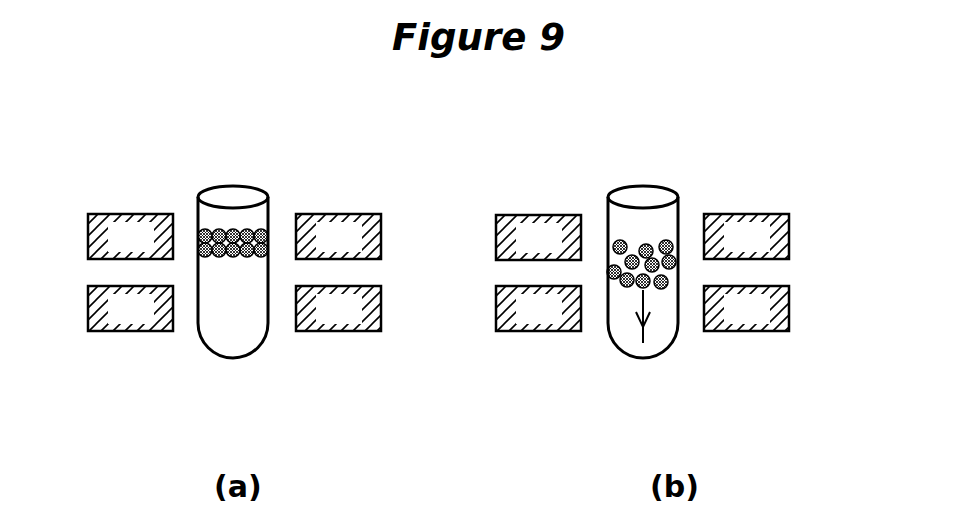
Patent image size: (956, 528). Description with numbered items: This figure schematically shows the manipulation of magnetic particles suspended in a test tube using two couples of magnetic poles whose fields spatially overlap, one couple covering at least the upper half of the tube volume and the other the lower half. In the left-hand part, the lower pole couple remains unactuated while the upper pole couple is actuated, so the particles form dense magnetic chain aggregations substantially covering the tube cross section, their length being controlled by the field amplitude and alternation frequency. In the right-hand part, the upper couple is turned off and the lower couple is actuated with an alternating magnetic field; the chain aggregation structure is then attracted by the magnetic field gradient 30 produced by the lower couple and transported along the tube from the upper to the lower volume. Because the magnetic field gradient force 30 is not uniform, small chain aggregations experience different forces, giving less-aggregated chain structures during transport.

The magnetic field gradient 30 is at (650, 356).